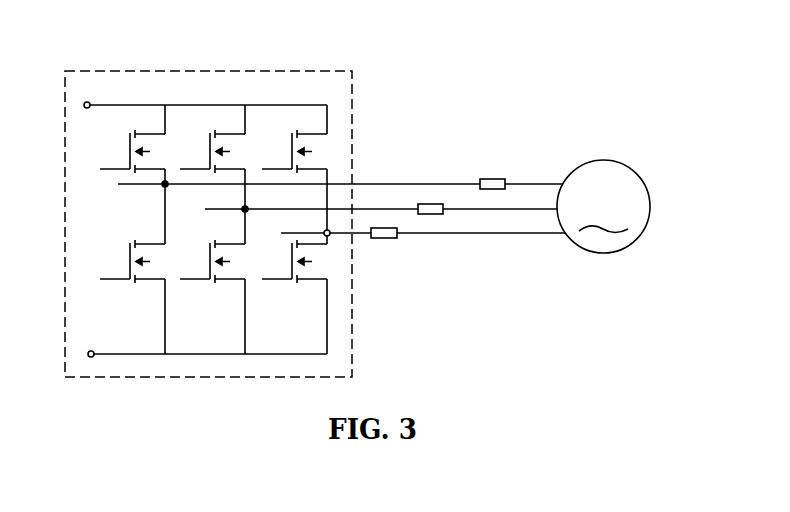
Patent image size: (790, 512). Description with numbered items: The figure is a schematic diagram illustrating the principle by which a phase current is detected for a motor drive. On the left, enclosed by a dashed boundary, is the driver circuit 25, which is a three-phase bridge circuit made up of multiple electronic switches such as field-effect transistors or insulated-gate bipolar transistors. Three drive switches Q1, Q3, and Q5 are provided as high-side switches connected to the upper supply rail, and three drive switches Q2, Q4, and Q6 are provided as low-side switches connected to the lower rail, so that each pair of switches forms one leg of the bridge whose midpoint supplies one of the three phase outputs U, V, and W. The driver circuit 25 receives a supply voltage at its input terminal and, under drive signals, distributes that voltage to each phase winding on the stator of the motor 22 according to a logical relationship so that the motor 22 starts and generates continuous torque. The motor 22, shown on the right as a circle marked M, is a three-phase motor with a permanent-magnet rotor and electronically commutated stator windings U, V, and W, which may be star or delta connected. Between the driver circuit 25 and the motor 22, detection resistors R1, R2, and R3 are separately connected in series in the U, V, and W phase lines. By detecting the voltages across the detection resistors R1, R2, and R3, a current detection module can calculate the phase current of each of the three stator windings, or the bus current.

The driver circuit 25 is at (65, 70).
The motor 22 is at (598, 252).
The drive switch Q1 is at (131, 151).
The drive switch Q2 is at (131, 261).
The drive switch Q3 is at (210, 151).
The drive switch Q4 is at (210, 261).
The drive switch Q5 is at (291, 151).
The drive switch Q6 is at (291, 261).
The detection resistor R1 is at (494, 173).
The detection resistor R2 is at (432, 198).
The detection resistor R3 is at (385, 222).